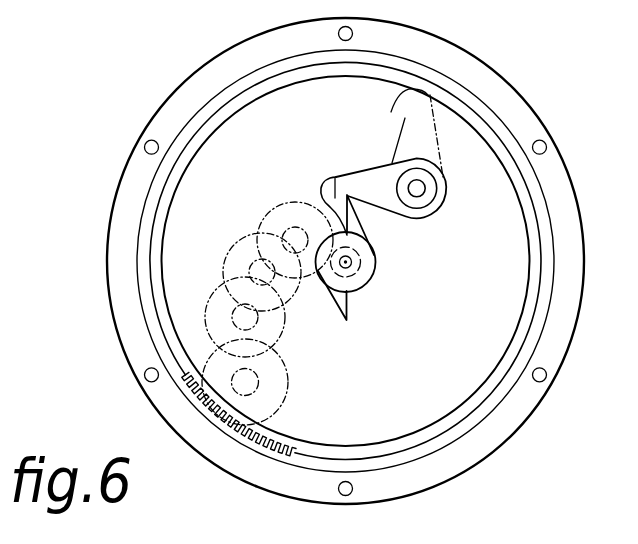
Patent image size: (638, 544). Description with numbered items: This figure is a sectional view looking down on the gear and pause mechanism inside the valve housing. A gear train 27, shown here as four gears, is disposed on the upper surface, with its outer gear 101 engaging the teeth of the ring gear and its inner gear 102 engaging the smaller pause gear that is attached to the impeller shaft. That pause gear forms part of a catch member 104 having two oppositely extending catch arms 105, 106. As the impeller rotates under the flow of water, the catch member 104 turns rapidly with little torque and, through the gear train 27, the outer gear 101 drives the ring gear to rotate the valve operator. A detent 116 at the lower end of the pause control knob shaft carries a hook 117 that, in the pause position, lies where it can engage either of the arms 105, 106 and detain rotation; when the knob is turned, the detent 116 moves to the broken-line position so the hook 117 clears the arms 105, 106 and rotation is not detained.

The gear train 27 is at (304, 337).
The outer gear 101 is at (288, 397).
The inner gear 102 is at (264, 213).
The catch member 104 is at (374, 267).
The catch arm 105 is at (348, 308).
The catch arm 106 is at (353, 227).
The detent 116 is at (427, 133).
The hook 117 is at (332, 173).